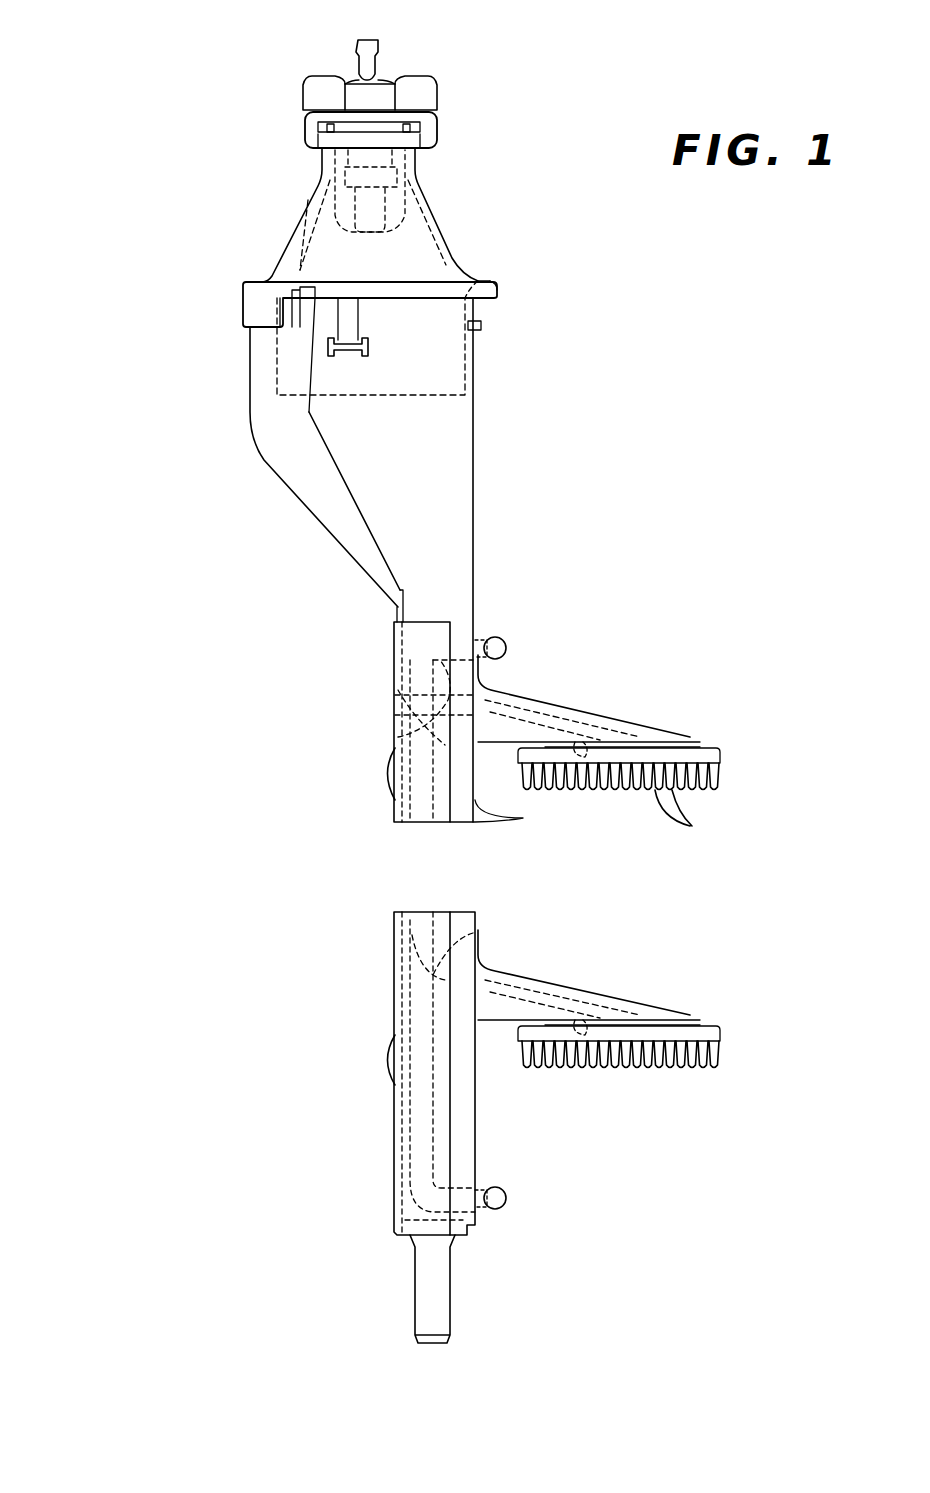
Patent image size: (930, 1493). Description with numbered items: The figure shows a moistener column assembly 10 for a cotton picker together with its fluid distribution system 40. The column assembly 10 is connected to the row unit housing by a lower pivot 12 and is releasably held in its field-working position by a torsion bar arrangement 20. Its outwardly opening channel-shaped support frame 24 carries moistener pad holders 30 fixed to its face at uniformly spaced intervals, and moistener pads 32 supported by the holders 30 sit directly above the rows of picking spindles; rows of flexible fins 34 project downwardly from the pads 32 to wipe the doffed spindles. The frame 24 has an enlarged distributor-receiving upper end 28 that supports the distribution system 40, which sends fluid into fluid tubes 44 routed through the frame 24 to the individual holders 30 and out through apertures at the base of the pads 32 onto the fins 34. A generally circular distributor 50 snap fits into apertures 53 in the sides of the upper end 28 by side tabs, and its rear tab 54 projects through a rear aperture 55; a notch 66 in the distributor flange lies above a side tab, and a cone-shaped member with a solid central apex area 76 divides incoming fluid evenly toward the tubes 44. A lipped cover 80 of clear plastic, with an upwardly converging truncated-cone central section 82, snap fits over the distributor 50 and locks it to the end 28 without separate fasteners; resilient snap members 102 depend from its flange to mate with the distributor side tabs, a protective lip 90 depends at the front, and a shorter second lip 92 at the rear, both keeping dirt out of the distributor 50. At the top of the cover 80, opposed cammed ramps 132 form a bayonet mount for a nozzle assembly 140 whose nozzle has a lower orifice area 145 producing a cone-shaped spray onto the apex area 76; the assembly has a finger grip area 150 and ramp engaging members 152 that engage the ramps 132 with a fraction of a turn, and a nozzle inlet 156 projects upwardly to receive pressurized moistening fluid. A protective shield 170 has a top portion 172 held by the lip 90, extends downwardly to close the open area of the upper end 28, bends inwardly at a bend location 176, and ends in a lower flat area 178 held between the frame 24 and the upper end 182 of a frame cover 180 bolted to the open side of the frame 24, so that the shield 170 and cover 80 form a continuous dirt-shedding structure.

The moistener column assembly 10 is at (180, 240).
The lower pivot 12 is at (413, 1275).
The torsion bar arrangement 20 is at (507, 645).
The support frame 24 is at (462, 573).
The upper end 28 is at (476, 411).
The moistener pad holders 30 is at (593, 726).
The moistener pads 32 is at (719, 748).
The flexible fins 34 is at (693, 813).
The fluid distribution system 40 is at (190, 302).
The fluid tubes 44 is at (398, 737).
The distributor 50 is at (455, 373).
The apertures 53 is at (355, 355).
The rear tab 54 is at (482, 326).
The rear aperture 55 is at (490, 285).
The notch 66 is at (328, 355).
The apex area 76 is at (355, 290).
The lipped cover 80 is at (427, 178).
The central section 82 is at (300, 222).
The protective lip 90 is at (243, 310).
The second lip 92 is at (498, 293).
The resilient snap members 102 is at (360, 322).
The cammed ramps 132 is at (430, 125).
The nozzle assembly 140 is at (432, 50).
The lower orifice area 145 is at (375, 233).
The finger grip area 150 is at (303, 88).
The ramp engaging members 152 is at (430, 153).
The nozzle inlet 156 is at (357, 45).
The protective shield 170 is at (247, 372).
The top portion 172 is at (250, 338).
The bend location 176 is at (253, 430).
The lower flat area 178 is at (395, 609).
The frame cover 180 is at (395, 1000).
The upper end 182 is at (442, 622).